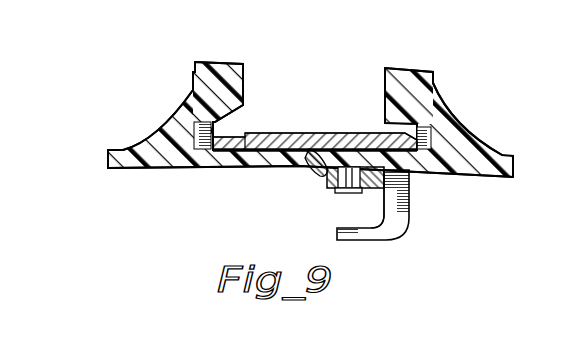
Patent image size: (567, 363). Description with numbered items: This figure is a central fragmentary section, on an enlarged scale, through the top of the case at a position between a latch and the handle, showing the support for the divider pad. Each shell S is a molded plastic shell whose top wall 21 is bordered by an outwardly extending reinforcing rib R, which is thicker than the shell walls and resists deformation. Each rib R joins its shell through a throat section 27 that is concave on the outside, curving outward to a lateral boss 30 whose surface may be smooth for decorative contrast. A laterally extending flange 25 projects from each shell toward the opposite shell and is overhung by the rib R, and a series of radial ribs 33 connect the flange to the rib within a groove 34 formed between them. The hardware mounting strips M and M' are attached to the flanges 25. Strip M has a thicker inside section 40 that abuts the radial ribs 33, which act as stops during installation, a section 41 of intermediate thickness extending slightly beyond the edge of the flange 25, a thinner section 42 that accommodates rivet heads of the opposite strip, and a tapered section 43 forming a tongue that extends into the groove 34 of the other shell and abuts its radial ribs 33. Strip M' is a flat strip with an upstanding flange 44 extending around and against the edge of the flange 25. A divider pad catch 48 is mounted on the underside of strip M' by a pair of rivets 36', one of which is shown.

The shell S is at (100, 155).
The rib R is at (213, 55).
The hardware mounting strip M is at (315, 110).
The hardware mounting strip M' is at (410, 200).
The top wall 21 is at (127, 150).
The laterally extending flange 25 is at (268, 170).
The throat section 27 is at (182, 120).
The lateral boss 30 is at (193, 72).
The radial ribs 33 is at (200, 148).
The groove 34 is at (235, 118).
The thicker inside section 40 is at (232, 143).
The section of intermediate thickness 41 is at (280, 134).
The thinner section 42 is at (342, 136).
The tapered section 43 is at (393, 140).
The upstanding flange 44 is at (312, 173).
The rivets 36' is at (349, 197).
The divider pad catch 48 is at (383, 239).